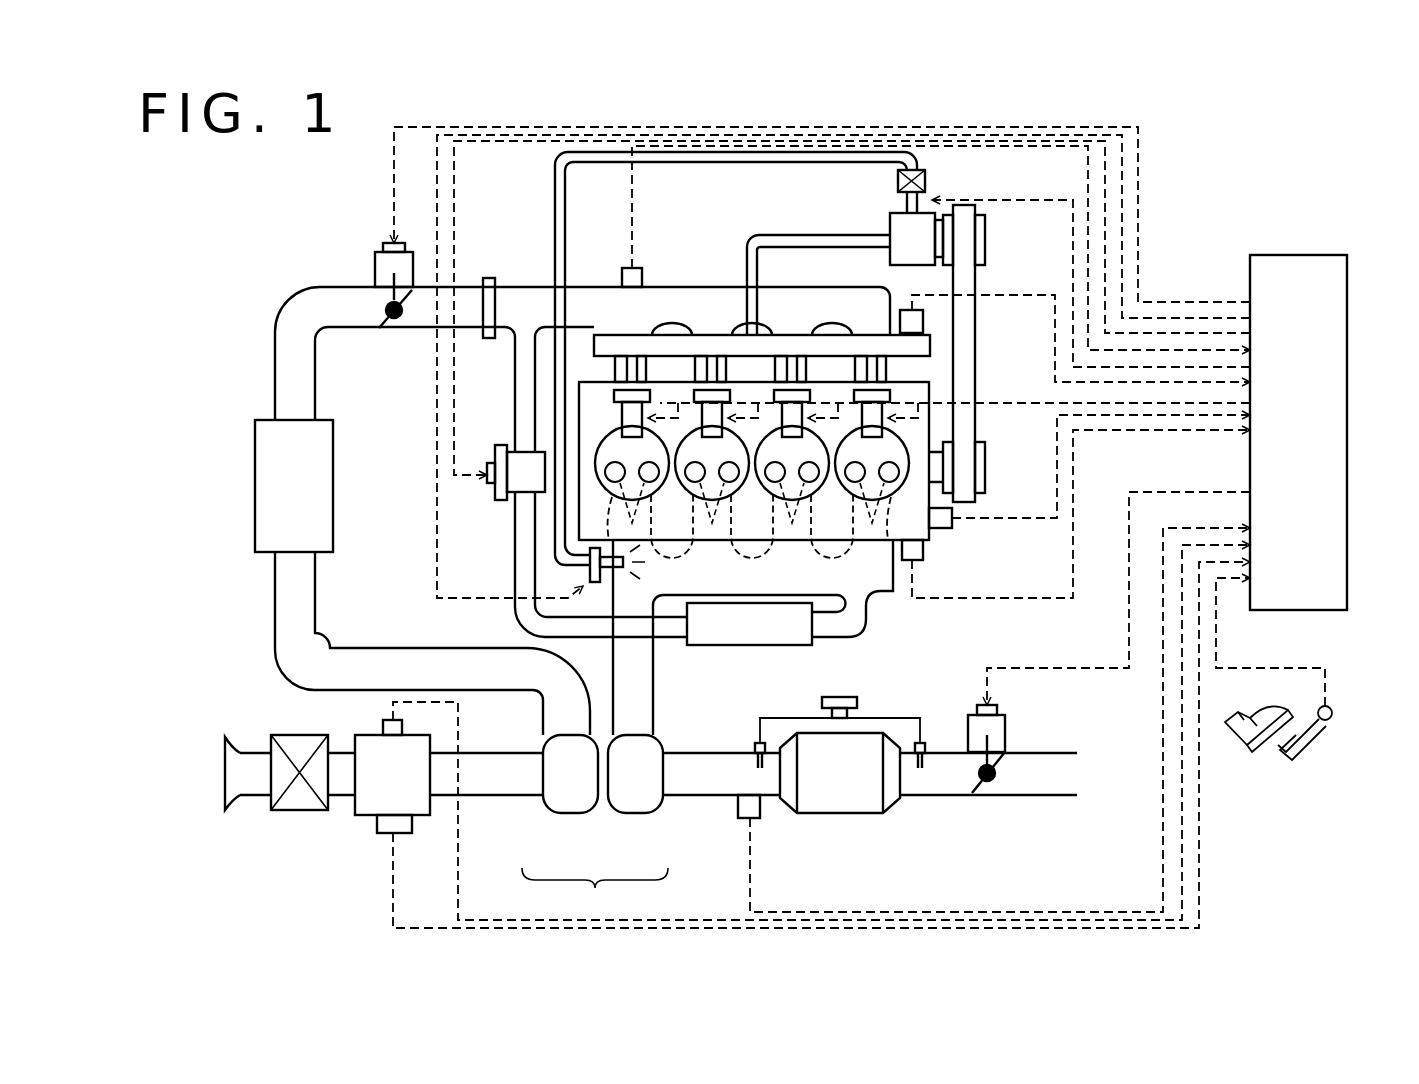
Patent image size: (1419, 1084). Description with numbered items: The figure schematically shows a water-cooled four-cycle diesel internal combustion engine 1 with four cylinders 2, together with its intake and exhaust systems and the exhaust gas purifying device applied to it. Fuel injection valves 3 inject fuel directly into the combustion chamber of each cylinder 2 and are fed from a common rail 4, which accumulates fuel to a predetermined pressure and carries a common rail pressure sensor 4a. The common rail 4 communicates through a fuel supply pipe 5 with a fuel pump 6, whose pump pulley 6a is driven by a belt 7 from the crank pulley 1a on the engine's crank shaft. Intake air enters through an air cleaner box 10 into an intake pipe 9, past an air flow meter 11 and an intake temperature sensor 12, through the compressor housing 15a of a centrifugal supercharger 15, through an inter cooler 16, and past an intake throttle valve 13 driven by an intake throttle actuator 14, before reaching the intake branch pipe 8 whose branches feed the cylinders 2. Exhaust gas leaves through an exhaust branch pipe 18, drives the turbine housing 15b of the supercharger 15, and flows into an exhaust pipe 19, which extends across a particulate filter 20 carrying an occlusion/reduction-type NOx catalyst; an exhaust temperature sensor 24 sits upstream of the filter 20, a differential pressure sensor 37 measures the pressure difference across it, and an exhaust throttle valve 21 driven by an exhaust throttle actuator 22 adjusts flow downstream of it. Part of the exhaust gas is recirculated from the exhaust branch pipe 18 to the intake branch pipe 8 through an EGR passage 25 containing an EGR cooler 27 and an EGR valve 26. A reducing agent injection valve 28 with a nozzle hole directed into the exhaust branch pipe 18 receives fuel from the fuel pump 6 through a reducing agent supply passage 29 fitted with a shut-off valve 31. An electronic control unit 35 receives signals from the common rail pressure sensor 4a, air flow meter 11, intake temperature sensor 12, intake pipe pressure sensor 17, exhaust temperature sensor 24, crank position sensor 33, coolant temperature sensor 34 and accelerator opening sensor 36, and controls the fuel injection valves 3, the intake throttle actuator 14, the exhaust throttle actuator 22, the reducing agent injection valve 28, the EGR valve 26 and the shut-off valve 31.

The internal combustion engine 1 is at (948, 548).
The crank pulley 1a is at (985, 470).
The cylinders 2 is at (906, 478).
The fuel injection valves 3 is at (622, 417).
The common rail 4 is at (912, 357).
The common rail pressure sensor 4a is at (911, 310).
The fuel supply pipe 5 is at (776, 236).
The fuel pump 6 is at (890, 226).
The pump pulley 6a is at (985, 251).
The belt 7 is at (975, 361).
The intake branch pipe 8 is at (683, 287).
The intake pipe 9 is at (275, 362).
The air cleaner box 10 is at (300, 735).
The air flow meter 11 is at (373, 833).
The intake temperature sensor 12 is at (383, 723).
The intake throttle valve 13 is at (394, 320).
The intake throttle actuator 14 is at (376, 264).
The centrifugal supercharger 15 is at (595, 895).
The compressor housing 15a is at (575, 814).
The turbine housing 15b is at (647, 814).
The inter cooler 16 is at (255, 446).
The intake pipe pressure sensor 17 is at (622, 277).
The exhaust branch pipe 18 is at (655, 689).
The exhaust pipe 19 is at (712, 752).
The particulate filter 20 is at (840, 814).
The exhaust throttle valve 21 is at (988, 782).
The exhaust throttle actuator 22 is at (1006, 731).
The exhaust temperature sensor 24 is at (742, 818).
The EGR passage 25 is at (515, 400).
The EGR valve 26 is at (500, 501).
The EGR cooler 27 is at (770, 646).
The reducing agent injection valve 28 is at (641, 571).
The reducing agent supply passage 29 is at (706, 161).
The shut-off valve 31 is at (898, 181).
The crank position sensor 33 is at (953, 526).
The coolant temperature sensor 34 is at (923, 560).
The electronic control unit 35 is at (1345, 612).
The accelerator opening sensor 36 is at (1330, 720).
The differential pressure sensor 37 is at (845, 697).